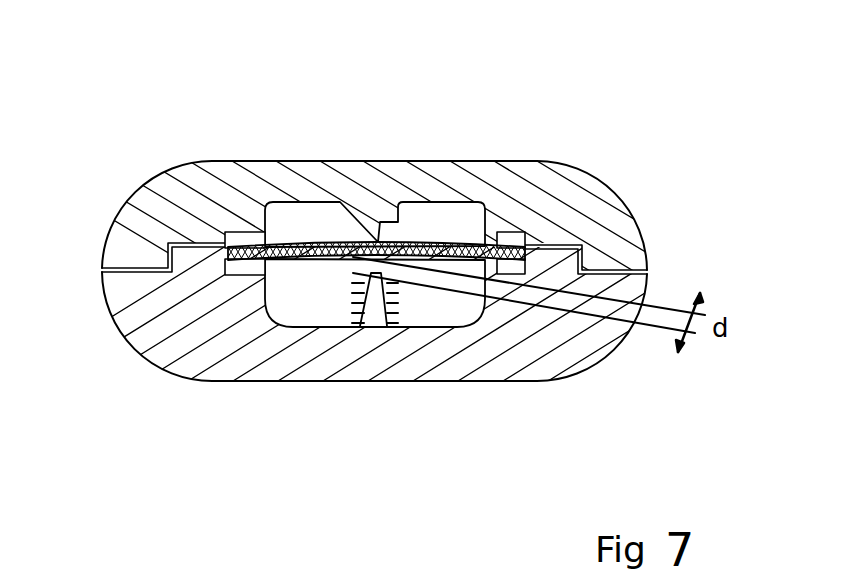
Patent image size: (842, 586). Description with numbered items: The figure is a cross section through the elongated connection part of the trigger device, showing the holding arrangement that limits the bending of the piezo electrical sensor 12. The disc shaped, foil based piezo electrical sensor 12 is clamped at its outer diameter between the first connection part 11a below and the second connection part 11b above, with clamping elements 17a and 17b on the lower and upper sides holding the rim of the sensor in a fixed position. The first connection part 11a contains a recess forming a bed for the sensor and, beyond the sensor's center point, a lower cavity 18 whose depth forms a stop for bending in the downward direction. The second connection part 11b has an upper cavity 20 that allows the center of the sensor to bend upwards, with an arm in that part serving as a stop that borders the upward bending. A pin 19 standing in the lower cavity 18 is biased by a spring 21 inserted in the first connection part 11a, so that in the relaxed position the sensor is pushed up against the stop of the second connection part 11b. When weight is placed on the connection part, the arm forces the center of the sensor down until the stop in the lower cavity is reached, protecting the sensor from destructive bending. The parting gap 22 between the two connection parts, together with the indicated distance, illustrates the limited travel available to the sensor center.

The first connection part 11a is at (318, 380).
The second connection part 11b is at (588, 180).
The piezo electrical sensor 12 is at (291, 243).
The lower clamping element 17a is at (238, 265).
The upper clamping element 17b is at (237, 237).
The lower cavity 18 is at (290, 293).
The pin 19 is at (377, 308).
The pressing wedge / upper cavity 20 is at (378, 242).
The spring 21 is at (397, 297).
The parting gap 22 is at (647, 272).